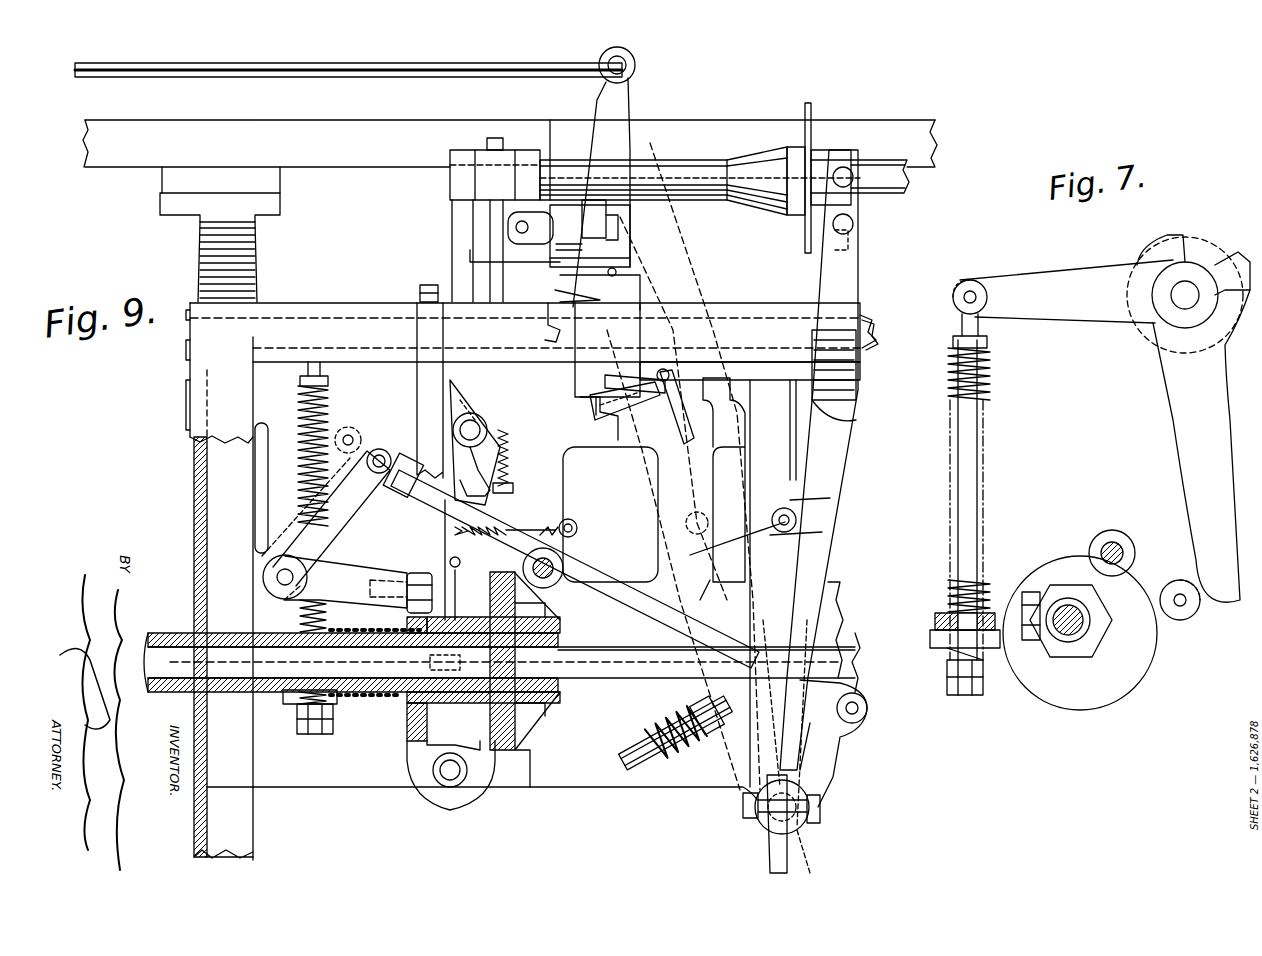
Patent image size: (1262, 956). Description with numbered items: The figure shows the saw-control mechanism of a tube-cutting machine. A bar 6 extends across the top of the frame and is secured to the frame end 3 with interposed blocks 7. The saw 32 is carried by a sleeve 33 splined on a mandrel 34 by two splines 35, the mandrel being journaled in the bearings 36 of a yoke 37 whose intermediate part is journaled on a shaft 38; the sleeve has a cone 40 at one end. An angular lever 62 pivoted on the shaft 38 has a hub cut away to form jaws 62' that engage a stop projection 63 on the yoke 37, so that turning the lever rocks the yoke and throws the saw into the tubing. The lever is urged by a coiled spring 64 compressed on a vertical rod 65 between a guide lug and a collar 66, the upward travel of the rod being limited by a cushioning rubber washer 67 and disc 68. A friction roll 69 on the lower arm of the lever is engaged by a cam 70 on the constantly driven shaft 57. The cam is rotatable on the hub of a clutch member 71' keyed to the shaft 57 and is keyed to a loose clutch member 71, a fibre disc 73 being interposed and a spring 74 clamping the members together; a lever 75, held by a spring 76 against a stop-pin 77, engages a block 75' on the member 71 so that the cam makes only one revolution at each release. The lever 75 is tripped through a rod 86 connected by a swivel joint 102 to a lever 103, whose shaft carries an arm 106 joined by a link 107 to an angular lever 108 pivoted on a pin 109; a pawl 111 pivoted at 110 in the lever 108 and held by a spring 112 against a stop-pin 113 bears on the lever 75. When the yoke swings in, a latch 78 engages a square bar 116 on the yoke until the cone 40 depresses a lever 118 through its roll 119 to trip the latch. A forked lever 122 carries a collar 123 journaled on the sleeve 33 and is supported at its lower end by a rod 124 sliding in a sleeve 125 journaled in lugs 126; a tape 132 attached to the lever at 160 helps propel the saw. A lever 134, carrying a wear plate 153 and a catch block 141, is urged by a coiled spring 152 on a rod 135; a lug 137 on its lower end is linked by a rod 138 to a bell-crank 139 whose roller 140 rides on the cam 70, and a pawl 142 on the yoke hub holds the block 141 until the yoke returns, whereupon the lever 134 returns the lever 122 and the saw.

In FIG. 9, the frame end 3 is at (198, 258).
In FIG. 9, the bar 6 is at (510, 143).
In FIG. 9, the blocks 7 is at (160, 182).
In FIG. 9, the saw 32 is at (812, 108).
In FIG. 9, the sleeve 33 is at (835, 148).
In FIG. 9, the mandrel 34 is at (890, 165).
In FIG. 9, the splines 35 is at (718, 160).
In FIG. 9, the bearings 36 is at (478, 155).
In FIG. 9, the yoke 37 is at (455, 228).
In FIG. 9, the shaft 38 is at (880, 318).
In FIG. 7, the shaft 38 is at (1170, 303).
In FIG. 9, the cone 40 is at (765, 210).
In FIG. 9, the shaft 57 is at (665, 678).
In FIG. 7, the shaft 57 is at (1090, 628).
In FIG. 9, the angular lever 62 is at (533, 332).
In FIG. 7, the angular lever 62 is at (1105, 419).
In FIG. 7, the jaws 62' is at (1193, 251).
In FIG. 9, the stop projection 63 is at (418, 290).
In FIG. 9, the coiled spring 64 is at (298, 465).
In FIG. 7, the coiled spring 64 is at (992, 398).
In FIG. 9, the vertical rod 65 is at (285, 412).
In FIG. 7, the vertical rod 65 is at (958, 530).
In FIG. 9, the collar 66 is at (332, 380).
In FIG. 7, the collar 66 is at (950, 345).
In FIG. 7, the rubber washer 67 is at (935, 640).
In FIG. 9, the disc 68 is at (283, 698).
In FIG. 7, the disc 68 is at (947, 660).
In FIG. 7, the friction roll 69 is at (1183, 620).
In FIG. 9, the cam 70 is at (405, 742).
In FIG. 7, the cam 70 is at (1130, 670).
In FIG. 9, the loose clutch member 71 is at (483, 678).
In FIG. 9, the clutch member 71' is at (542, 674).
In FIG. 9, the fibre disc 73 is at (510, 795).
In FIG. 9, the spring 74 is at (365, 700).
In FIG. 9, the lever 75 is at (365, 671).
In FIG. 9, the block 75' is at (497, 661).
In FIG. 9, the spring 76 is at (506, 545).
In FIG. 9, the stop-pin 77 is at (478, 580).
In FIG. 9, the latch 78 is at (543, 332).
In FIG. 9, the rod 86 is at (372, 80).
In FIG. 9, the swivel joint 102 is at (637, 62).
In FIG. 9, the lever 103 is at (605, 96).
In FIG. 9, the arm 106 is at (640, 273).
In FIG. 9, the link 107 is at (604, 296).
In FIG. 9, the angular lever 108 is at (465, 390).
In FIG. 9, the pin 109 is at (487, 428).
In FIG. 9, the pivot 110 is at (500, 479).
In FIG. 9, the pawl 111 is at (512, 480).
In FIG. 9, the spring 112 is at (510, 440).
In FIG. 9, the stop-pin 113 is at (405, 435).
In FIG. 9, the square bar 116 is at (455, 262).
In FIG. 9, the lever 118 is at (515, 245).
In FIG. 9, the roll 119 is at (632, 242).
In FIG. 9, the lever 122 is at (860, 482).
In FIG. 9, the collar 123 is at (852, 172).
In FIG. 9, the rod 124 is at (820, 780).
In FIG. 9, the sleeve 125 is at (768, 856).
In FIG. 9, the lugs 126 is at (810, 820).
In FIG. 9, the tape 132 is at (690, 555).
In FIG. 9, the lever 134 is at (860, 505).
In FIG. 9, the rod 135 is at (635, 775).
In FIG. 9, the lug 137 is at (858, 735).
In FIG. 9, the rod 138 is at (660, 632).
In FIG. 9, the bell-crank lever 139 is at (365, 498).
In FIG. 9, the roller 140 is at (430, 570).
In FIG. 7, the roller 140 is at (1090, 548).
In FIG. 9, the block 141 is at (732, 360).
In FIG. 9, the pawl 142 is at (640, 410).
In FIG. 9, the coiled spring 152 is at (688, 760).
In FIG. 9, the wear plate 153 is at (858, 425).
In FIG. 9, the tape attachment point 160 is at (745, 582).